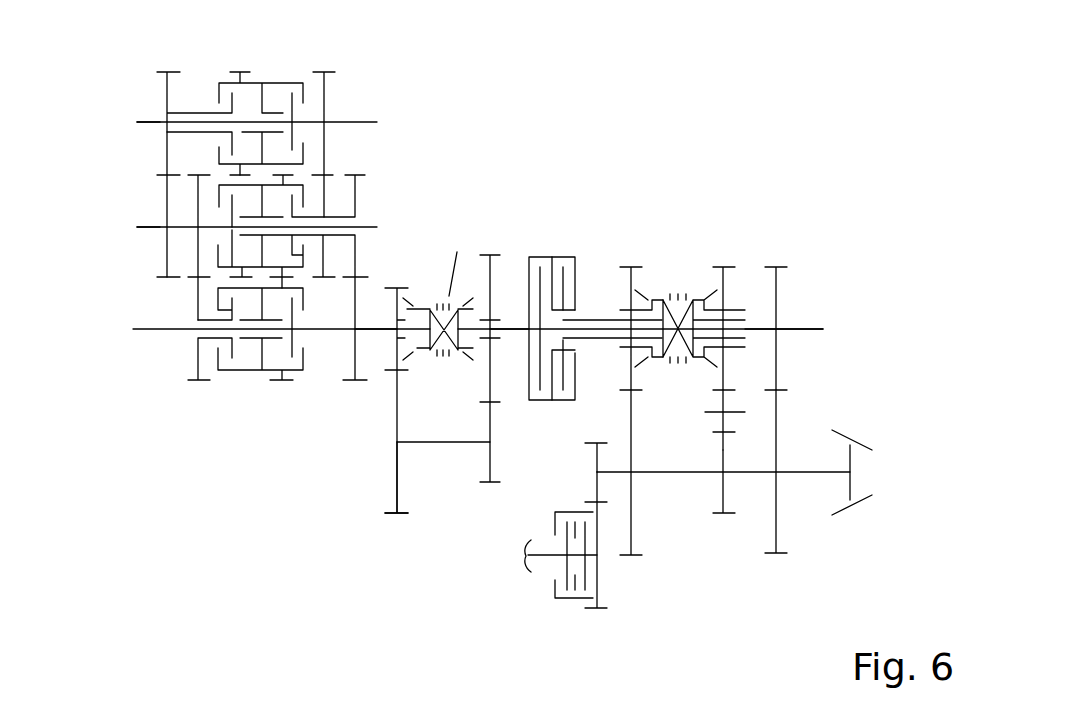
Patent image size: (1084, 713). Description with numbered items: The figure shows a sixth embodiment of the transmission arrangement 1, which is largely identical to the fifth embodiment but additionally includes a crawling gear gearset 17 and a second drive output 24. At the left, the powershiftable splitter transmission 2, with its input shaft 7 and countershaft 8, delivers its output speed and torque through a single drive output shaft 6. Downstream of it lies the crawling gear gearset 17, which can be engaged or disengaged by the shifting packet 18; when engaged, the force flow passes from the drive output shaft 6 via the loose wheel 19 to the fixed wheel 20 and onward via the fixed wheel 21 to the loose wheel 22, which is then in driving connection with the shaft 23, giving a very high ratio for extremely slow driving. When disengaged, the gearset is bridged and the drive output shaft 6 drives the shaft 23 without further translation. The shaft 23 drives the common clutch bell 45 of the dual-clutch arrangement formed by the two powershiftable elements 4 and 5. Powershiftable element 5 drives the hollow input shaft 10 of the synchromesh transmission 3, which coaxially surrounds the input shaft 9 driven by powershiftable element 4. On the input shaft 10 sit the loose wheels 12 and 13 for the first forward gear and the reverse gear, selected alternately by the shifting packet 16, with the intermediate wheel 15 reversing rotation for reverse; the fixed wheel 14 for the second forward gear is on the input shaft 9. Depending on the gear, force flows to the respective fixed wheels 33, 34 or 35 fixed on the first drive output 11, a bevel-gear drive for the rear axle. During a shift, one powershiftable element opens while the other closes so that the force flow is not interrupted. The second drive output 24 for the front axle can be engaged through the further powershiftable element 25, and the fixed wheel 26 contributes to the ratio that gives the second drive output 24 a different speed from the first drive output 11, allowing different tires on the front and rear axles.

The transmission arrangement 1 is at (848, 140).
The splitter transmission 2 is at (222, 400).
The synchromesh transmission 3 is at (850, 278).
The powershiftable element 4 is at (533, 402).
The powershiftable element 5 is at (555, 403).
The drive output shaft 6 is at (378, 333).
The input shaft 7 is at (150, 227).
The countershaft 8 is at (150, 122).
The input shaft 9 is at (805, 328).
The input shaft 10 is at (593, 320).
The first drive output 11 is at (803, 473).
The loose wheel 12 is at (633, 288).
The loose wheel 13 is at (730, 292).
The fixed wheel 14 is at (778, 290).
The intermediate wheel 15 is at (730, 420).
The shifting packet 16 is at (678, 297).
The crawling gear gearset 17 is at (444, 240).
The shifting packet 18 is at (517, 329).
The loose wheel 19 is at (398, 296).
The fixed wheel 20 is at (395, 478).
The fixed wheel 21 is at (482, 465).
The loose wheel 22 is at (487, 363).
The shaft 23 is at (529, 257).
The second drive output 24 is at (545, 560).
The further powershiftable element 25 is at (572, 600).
The fixed wheel 26 is at (598, 488).
The fixed wheel 33 is at (633, 513).
The fixed wheel 34 is at (777, 523).
The fixed wheel 35 is at (727, 493).
The clutch bell 45 is at (553, 257).